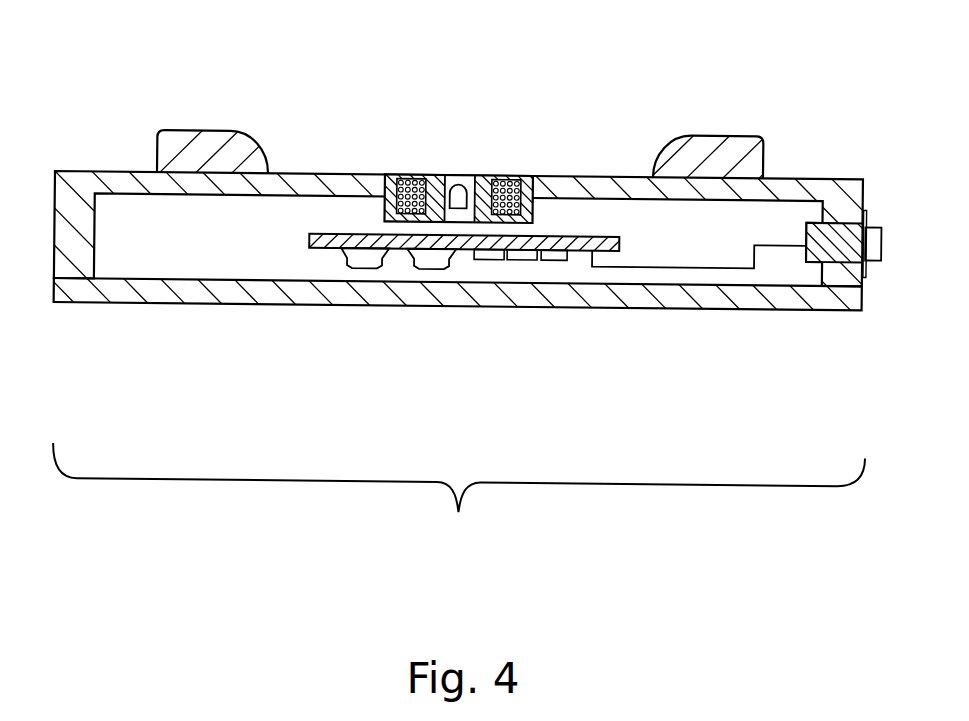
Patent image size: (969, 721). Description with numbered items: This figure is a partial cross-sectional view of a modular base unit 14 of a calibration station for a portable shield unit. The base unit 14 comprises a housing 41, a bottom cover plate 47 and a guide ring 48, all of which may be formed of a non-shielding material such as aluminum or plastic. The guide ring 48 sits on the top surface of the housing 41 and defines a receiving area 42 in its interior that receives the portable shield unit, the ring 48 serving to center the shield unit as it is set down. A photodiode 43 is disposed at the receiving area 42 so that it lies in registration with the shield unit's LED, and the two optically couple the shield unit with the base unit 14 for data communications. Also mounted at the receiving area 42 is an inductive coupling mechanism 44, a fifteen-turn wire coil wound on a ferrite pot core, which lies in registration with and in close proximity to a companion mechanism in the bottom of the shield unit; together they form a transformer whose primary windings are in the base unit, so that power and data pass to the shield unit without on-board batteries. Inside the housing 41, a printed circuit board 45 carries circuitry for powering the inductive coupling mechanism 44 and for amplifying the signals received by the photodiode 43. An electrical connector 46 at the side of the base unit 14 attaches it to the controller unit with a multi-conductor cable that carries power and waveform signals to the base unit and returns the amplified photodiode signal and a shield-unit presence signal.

The base unit 14 is at (458, 499).
The housing 41 is at (143, 170).
The receiving area 42 is at (585, 177).
The photodiode 43 is at (457, 185).
The inductive coupling mechanism 44 is at (407, 175).
The printed circuit board 45 is at (318, 250).
The electrical connector 46 is at (880, 224).
The bottom cover plate 47 is at (678, 309).
The guide ring 48 is at (242, 131).